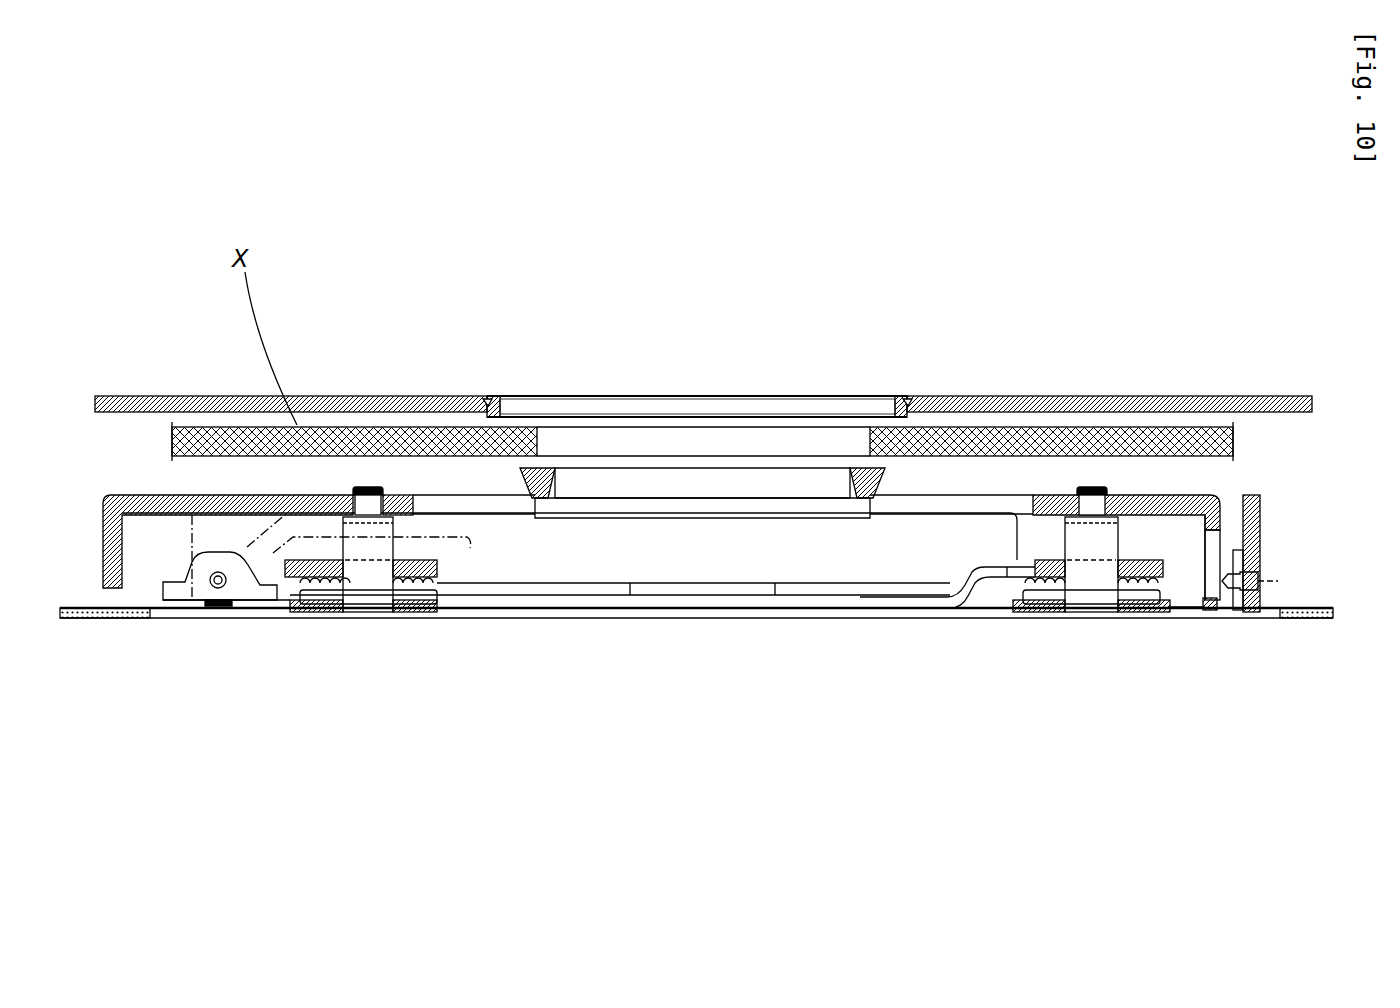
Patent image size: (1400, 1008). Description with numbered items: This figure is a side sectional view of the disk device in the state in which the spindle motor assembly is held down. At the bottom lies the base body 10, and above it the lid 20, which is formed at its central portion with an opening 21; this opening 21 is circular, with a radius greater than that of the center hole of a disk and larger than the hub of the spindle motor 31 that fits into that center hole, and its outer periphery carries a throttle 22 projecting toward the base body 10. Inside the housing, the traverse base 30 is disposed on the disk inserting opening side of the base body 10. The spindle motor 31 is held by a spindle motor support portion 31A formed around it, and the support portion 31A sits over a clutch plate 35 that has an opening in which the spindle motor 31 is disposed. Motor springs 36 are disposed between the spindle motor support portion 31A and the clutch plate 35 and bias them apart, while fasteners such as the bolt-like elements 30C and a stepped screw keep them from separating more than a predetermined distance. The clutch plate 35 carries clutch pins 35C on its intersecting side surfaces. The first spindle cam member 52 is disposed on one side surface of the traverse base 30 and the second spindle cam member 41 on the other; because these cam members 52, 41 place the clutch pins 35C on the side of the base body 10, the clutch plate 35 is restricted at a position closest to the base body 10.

The base body 10 is at (123, 620).
The lid 20 is at (428, 395).
The opening 21 is at (632, 410).
The throttle 22 is at (492, 397).
The traverse base 30 is at (1183, 515).
The fastening bolt 30C is at (1095, 487).
The spindle motor 31 is at (728, 566).
The spindle motor support portion 31A is at (1140, 565).
The clutch plate 35 is at (1200, 605).
The clutch pin 35C is at (1255, 612).
The motor spring 36 is at (1035, 615).
The second spindle cam member 41 is at (1262, 505).
The first spindle cam member 52 is at (185, 614).